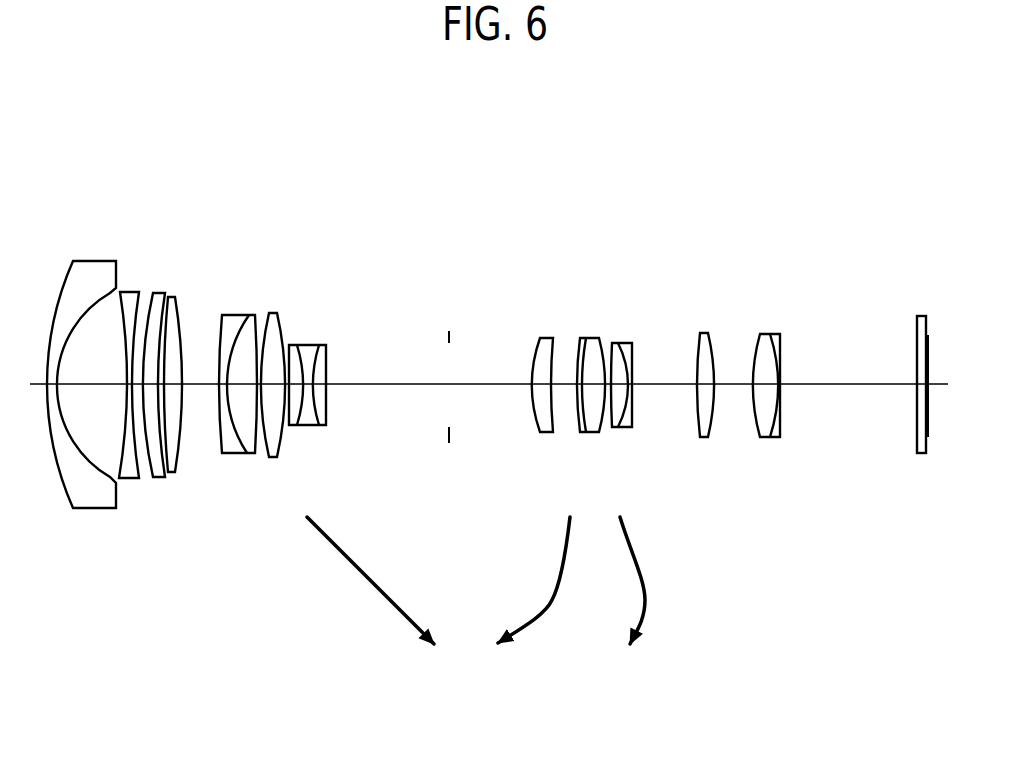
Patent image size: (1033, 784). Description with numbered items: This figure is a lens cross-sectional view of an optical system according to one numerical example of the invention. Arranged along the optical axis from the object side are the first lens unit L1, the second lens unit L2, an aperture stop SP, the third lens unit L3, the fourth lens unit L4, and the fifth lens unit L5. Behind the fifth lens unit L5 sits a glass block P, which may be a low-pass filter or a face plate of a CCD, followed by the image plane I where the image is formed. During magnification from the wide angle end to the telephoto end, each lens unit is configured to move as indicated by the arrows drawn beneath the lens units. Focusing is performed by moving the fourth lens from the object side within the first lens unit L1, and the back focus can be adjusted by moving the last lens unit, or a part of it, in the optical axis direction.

The first lens unit L1 is at (54, 252).
The second lens unit L2 is at (291, 252).
The aperture stop SP is at (448, 325).
The third lens unit L3 is at (533, 252).
The fourth lens unit L4 is at (613, 252).
The fifth lens unit L5 is at (701, 252).
The glass block P is at (917, 252).
The image plane I is at (928, 338).